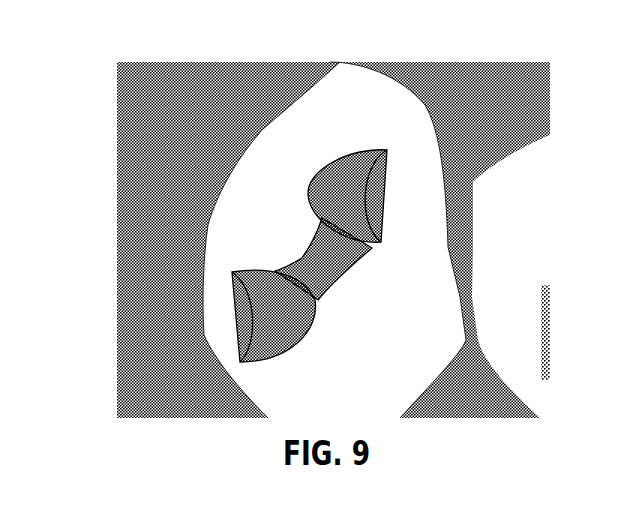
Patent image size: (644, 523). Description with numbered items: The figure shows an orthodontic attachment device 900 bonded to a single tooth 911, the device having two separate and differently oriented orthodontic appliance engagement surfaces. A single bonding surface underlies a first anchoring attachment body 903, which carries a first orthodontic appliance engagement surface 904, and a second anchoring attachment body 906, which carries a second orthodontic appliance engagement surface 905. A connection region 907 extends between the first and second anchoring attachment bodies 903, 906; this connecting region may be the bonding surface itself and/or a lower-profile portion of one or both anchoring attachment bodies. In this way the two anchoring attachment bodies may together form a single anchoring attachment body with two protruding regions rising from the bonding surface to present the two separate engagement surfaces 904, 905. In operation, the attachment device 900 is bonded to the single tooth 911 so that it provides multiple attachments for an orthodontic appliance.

The orthodontic attachment device 900 is at (279, 192).
The first anchoring attachment body 903 is at (308, 182).
The first orthodontic appliance engagement surface 904 is at (378, 180).
The second orthodontic appliance engagement surface 905 is at (238, 322).
The second anchoring attachment body 906 is at (290, 317).
The connection region 907 is at (300, 255).
The tooth 911 is at (427, 228).